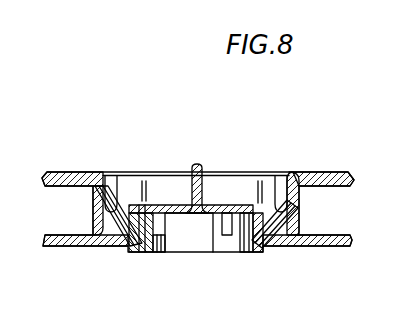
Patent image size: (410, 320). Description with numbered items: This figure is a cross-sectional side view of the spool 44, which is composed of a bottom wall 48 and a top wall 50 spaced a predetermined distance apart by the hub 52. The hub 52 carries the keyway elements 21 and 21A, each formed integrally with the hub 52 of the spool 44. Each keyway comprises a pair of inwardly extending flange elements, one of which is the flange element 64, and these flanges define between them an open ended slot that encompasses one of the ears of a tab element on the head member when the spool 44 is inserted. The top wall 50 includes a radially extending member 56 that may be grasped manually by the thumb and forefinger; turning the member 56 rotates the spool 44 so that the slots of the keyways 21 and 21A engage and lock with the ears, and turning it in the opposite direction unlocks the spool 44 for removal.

The spool 44 is at (154, 104).
The keyway element 21 is at (162, 212).
The keyway element 21A is at (245, 222).
The bottom wall 48 is at (337, 247).
The top wall 50 is at (330, 173).
The hub 52 is at (93, 208).
The radially extending member 56 is at (202, 170).
The flange element 64 is at (150, 254).